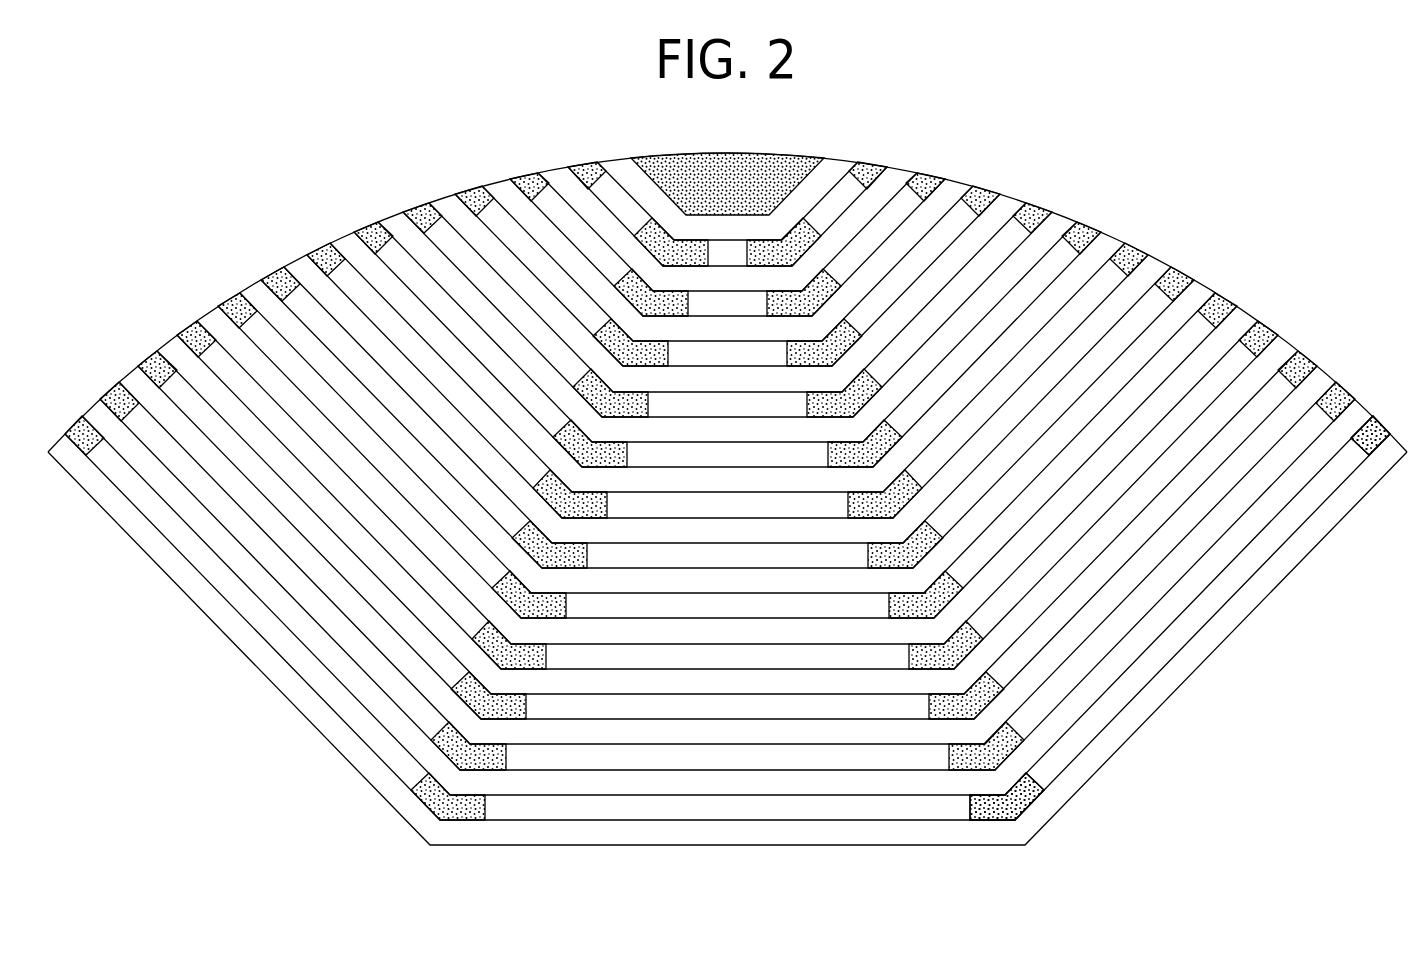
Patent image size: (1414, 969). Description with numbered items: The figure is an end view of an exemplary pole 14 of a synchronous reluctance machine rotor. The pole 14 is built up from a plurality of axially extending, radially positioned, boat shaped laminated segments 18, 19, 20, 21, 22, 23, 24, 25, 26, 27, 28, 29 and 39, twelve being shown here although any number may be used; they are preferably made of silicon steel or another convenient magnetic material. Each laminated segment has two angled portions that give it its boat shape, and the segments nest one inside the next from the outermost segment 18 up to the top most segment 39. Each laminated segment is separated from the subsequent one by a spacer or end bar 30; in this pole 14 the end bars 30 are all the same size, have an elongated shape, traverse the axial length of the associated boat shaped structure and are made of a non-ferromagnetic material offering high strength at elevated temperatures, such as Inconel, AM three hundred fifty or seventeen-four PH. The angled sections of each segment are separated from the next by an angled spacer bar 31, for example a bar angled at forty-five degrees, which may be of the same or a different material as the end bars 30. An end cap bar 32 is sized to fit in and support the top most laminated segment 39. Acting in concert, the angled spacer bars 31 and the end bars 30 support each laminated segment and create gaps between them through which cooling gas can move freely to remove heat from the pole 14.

The pole 14 is at (730, 508).
The laminated segment 18 is at (893, 859).
The laminated segment 19 is at (873, 796).
The laminated segment 20 is at (853, 746).
The laminated segment 21 is at (833, 695).
The laminated segment 22 is at (812, 645).
The laminated segment 23 is at (792, 595).
The laminated segment 24 is at (772, 544).
The laminated segment 25 is at (750, 494).
The laminated segment 26 is at (730, 443).
The laminated segment 27 is at (710, 393).
The laminated segment 28 is at (710, 343).
The laminated segment 29 is at (710, 293).
The end bar 30 is at (1383, 426).
The angled spacer bar 31 is at (992, 822).
The end cap bar 32 is at (748, 154).
The laminated segment 39 is at (722, 244).